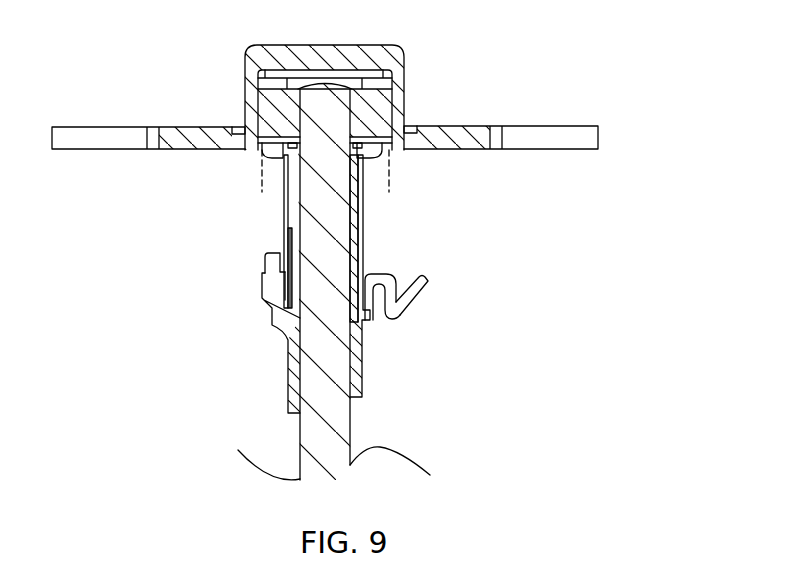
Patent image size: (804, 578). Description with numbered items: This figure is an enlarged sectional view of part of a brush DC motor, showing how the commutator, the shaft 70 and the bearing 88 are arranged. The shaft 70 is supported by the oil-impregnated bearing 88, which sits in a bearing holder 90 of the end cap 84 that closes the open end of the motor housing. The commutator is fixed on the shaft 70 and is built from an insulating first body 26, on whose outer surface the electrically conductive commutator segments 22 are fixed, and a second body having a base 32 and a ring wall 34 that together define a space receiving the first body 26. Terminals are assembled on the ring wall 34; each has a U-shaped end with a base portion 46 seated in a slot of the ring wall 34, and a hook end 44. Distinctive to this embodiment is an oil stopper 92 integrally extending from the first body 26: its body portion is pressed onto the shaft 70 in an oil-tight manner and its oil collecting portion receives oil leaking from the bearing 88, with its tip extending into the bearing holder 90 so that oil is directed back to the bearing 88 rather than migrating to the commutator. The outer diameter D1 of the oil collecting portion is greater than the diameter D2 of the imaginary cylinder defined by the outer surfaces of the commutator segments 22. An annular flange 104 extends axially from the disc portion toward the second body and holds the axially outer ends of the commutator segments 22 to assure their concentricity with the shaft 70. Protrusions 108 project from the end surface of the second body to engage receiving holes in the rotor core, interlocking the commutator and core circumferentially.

The commutator segment 22 is at (368, 248).
The first body 26 is at (298, 236).
The base 32 is at (287, 342).
The ring wall 34 is at (268, 288).
The hook end 44 is at (422, 297).
The base portion 46 is at (385, 273).
The shaft 70 is at (335, 418).
The end cap 84 is at (173, 133).
The bearing 88 is at (367, 102).
The bearing holder 90 is at (263, 58).
The oil stopper 92 is at (372, 142).
The annular flange 104 is at (260, 148).
The protrusion 108 is at (295, 402).
The outer diameter of the oil collecting portion D1 is at (228, 171).
The diameter of the imaginary cylinder defined by the outer surfaces of the commutat D2 is at (252, 209).